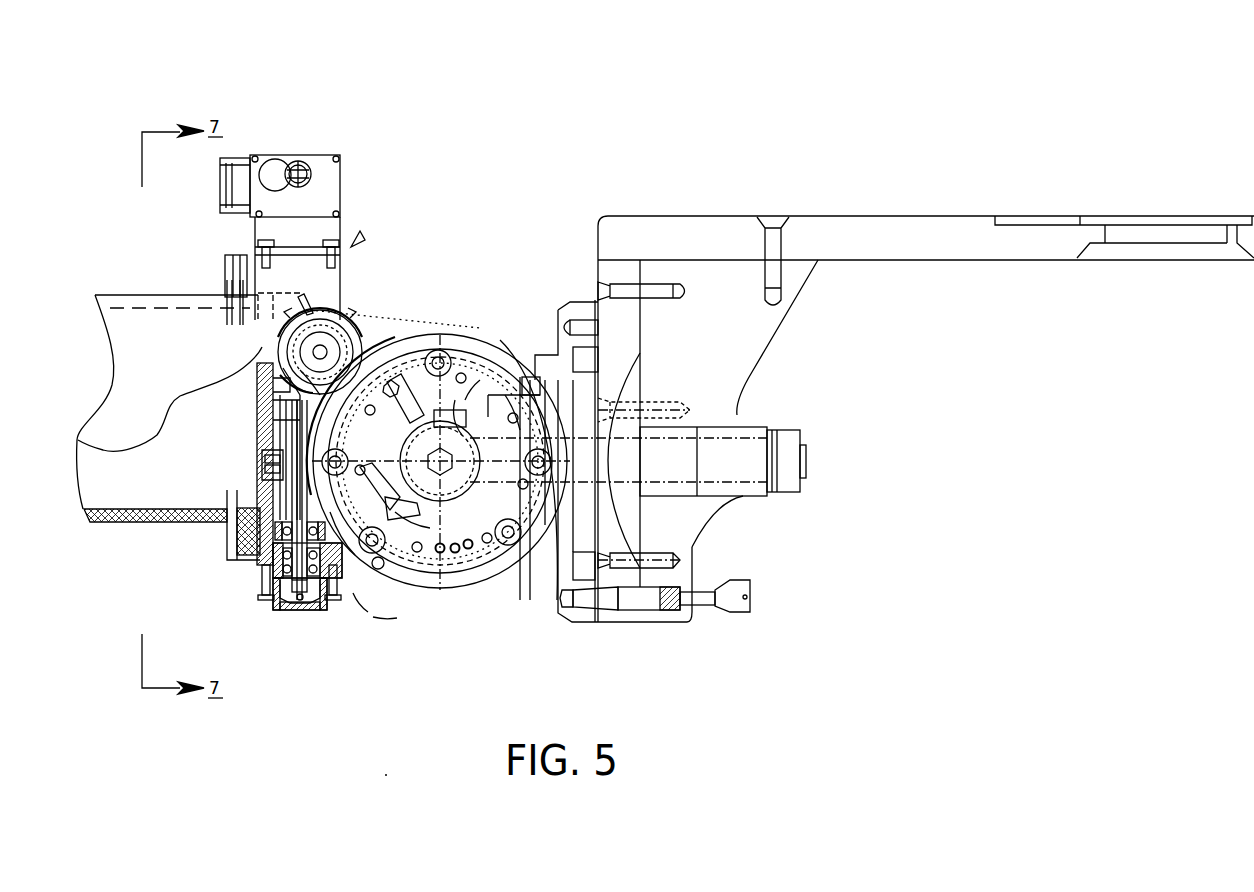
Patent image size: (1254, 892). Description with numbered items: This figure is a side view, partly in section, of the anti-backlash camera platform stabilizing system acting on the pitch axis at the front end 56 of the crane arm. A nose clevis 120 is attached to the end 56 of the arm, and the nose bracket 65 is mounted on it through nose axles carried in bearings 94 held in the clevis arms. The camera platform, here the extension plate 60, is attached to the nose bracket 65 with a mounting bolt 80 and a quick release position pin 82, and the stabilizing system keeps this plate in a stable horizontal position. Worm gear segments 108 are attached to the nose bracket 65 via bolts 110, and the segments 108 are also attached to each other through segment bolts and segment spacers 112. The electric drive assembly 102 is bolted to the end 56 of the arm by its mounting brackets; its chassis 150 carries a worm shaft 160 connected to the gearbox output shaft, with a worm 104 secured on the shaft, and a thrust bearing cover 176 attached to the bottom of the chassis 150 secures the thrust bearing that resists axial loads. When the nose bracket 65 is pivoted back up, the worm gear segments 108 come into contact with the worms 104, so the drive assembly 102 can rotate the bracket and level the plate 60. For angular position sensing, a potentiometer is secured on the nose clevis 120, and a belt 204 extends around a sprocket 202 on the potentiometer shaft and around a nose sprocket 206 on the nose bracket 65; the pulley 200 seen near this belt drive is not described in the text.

The front end of the crane arm 56 is at (190, 513).
The extension plate 60 is at (753, 347).
The nose bracket 65 is at (548, 365).
The mounting bolt 80 is at (727, 470).
The quick release position pin 82 is at (735, 603).
The bearing 94 is at (468, 543).
The drive assembly 102 is at (332, 312).
The worm 104 is at (265, 468).
The worm gear segments 108 is at (378, 563).
The bolts 110 is at (413, 510).
The segment spacers 112 is at (440, 627).
The nose clevis 120 is at (323, 337).
The chassis 150 is at (312, 233).
The worm shaft 160 is at (300, 435).
The thrust bearing cover 176 is at (318, 612).
The pulley 200 is at (330, 333).
The sprocket 202 is at (313, 348).
The belt 204 is at (425, 393).
The nose sprocket 206 is at (460, 425).